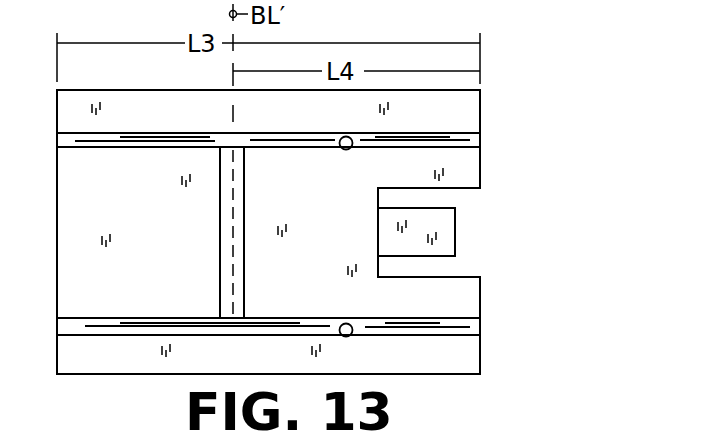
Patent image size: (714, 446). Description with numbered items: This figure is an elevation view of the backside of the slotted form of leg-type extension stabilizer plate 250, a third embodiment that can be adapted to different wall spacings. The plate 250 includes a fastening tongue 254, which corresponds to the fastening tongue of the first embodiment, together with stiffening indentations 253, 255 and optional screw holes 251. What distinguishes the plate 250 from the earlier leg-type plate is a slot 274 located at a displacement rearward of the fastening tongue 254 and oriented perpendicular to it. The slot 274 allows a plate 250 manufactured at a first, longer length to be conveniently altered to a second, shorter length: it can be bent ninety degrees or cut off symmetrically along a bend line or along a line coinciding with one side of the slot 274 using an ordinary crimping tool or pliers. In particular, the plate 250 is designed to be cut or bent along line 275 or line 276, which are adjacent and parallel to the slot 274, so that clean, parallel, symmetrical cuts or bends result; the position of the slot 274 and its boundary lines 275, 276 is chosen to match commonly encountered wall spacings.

The slotted form of leg-type extension stabilizer plate 250 is at (500, 153).
The screw holes 251 is at (346, 136).
The stiffening indentation 253 is at (157, 148).
The fastening tongue 254 is at (438, 238).
The stiffening indentation 255 is at (425, 328).
The slot 274 is at (234, 191).
The line 275 is at (220, 268).
The line 276 is at (244, 272).